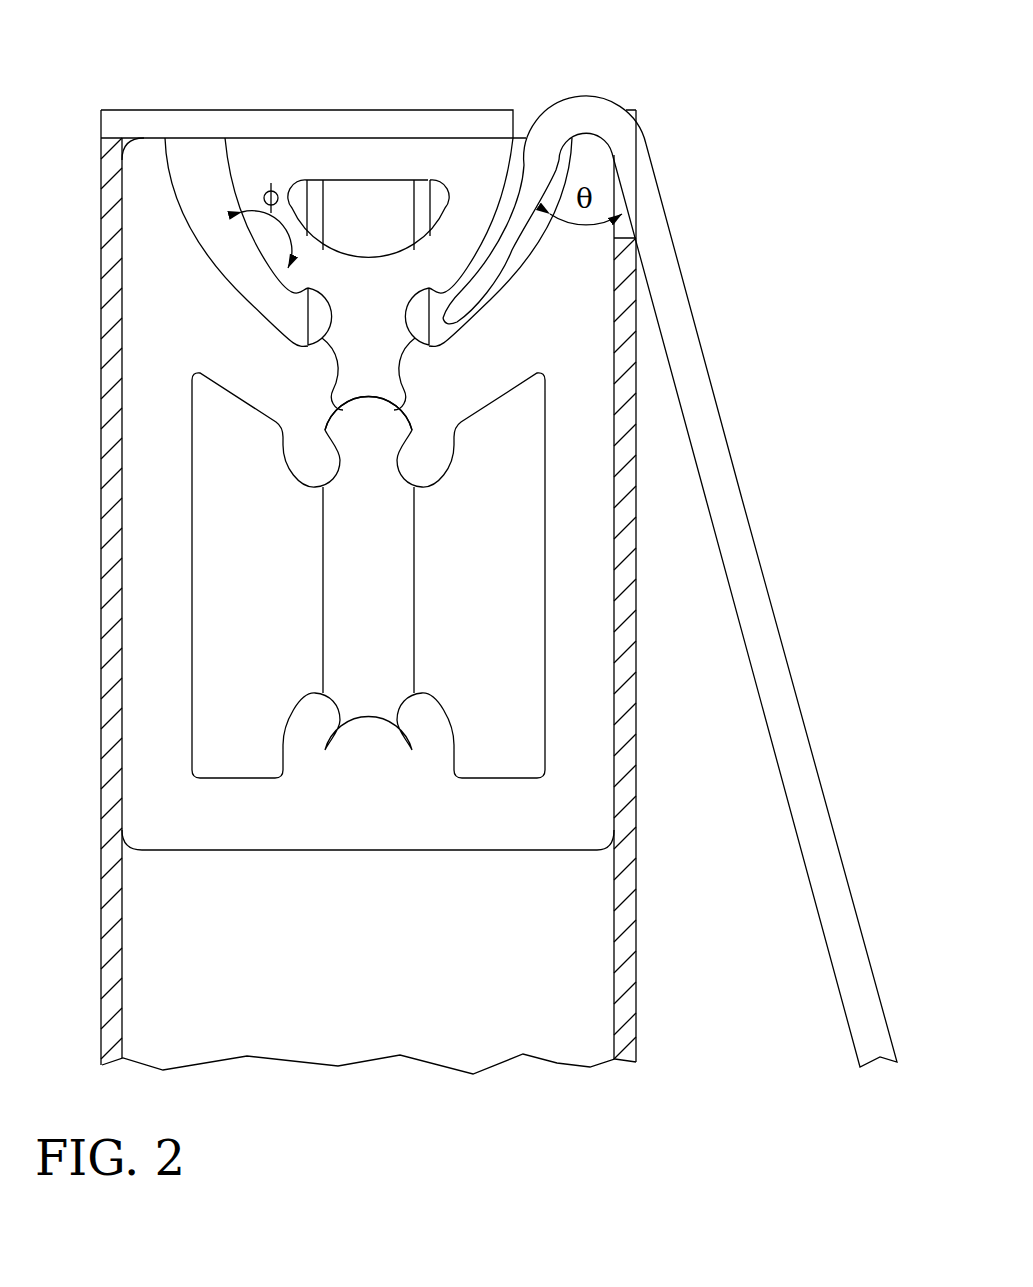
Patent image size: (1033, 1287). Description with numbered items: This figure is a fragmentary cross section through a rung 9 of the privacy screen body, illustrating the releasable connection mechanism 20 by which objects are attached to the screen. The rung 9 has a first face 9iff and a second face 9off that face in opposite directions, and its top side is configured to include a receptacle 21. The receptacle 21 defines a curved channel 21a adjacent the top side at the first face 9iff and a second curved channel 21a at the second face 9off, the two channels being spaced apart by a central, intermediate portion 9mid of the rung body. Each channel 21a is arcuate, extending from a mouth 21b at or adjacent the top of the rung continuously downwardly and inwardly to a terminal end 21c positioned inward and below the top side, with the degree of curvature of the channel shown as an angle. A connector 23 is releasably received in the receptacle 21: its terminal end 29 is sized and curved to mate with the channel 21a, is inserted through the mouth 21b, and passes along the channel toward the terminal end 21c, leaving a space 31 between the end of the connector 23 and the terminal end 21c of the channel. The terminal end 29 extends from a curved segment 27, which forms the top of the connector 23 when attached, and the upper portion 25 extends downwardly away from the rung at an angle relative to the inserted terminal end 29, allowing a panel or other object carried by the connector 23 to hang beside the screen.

The connection mechanism 20 is at (111, 63).
The rung 9 is at (535, 1027).
The second face 9off is at (101, 640).
The first face 9iff is at (636, 623).
The central intermediate portion 9mid is at (356, 164).
The receptacle 21 is at (302, 412).
The curved channel 21a is at (213, 193).
The mouth 21b is at (182, 158).
The terminal end 21c is at (368, 413).
The connector 23 is at (762, 450).
The upper portion 25 is at (662, 203).
The curved segment 27 is at (600, 116).
The terminal end 29 is at (545, 130).
The space 31 is at (438, 327).